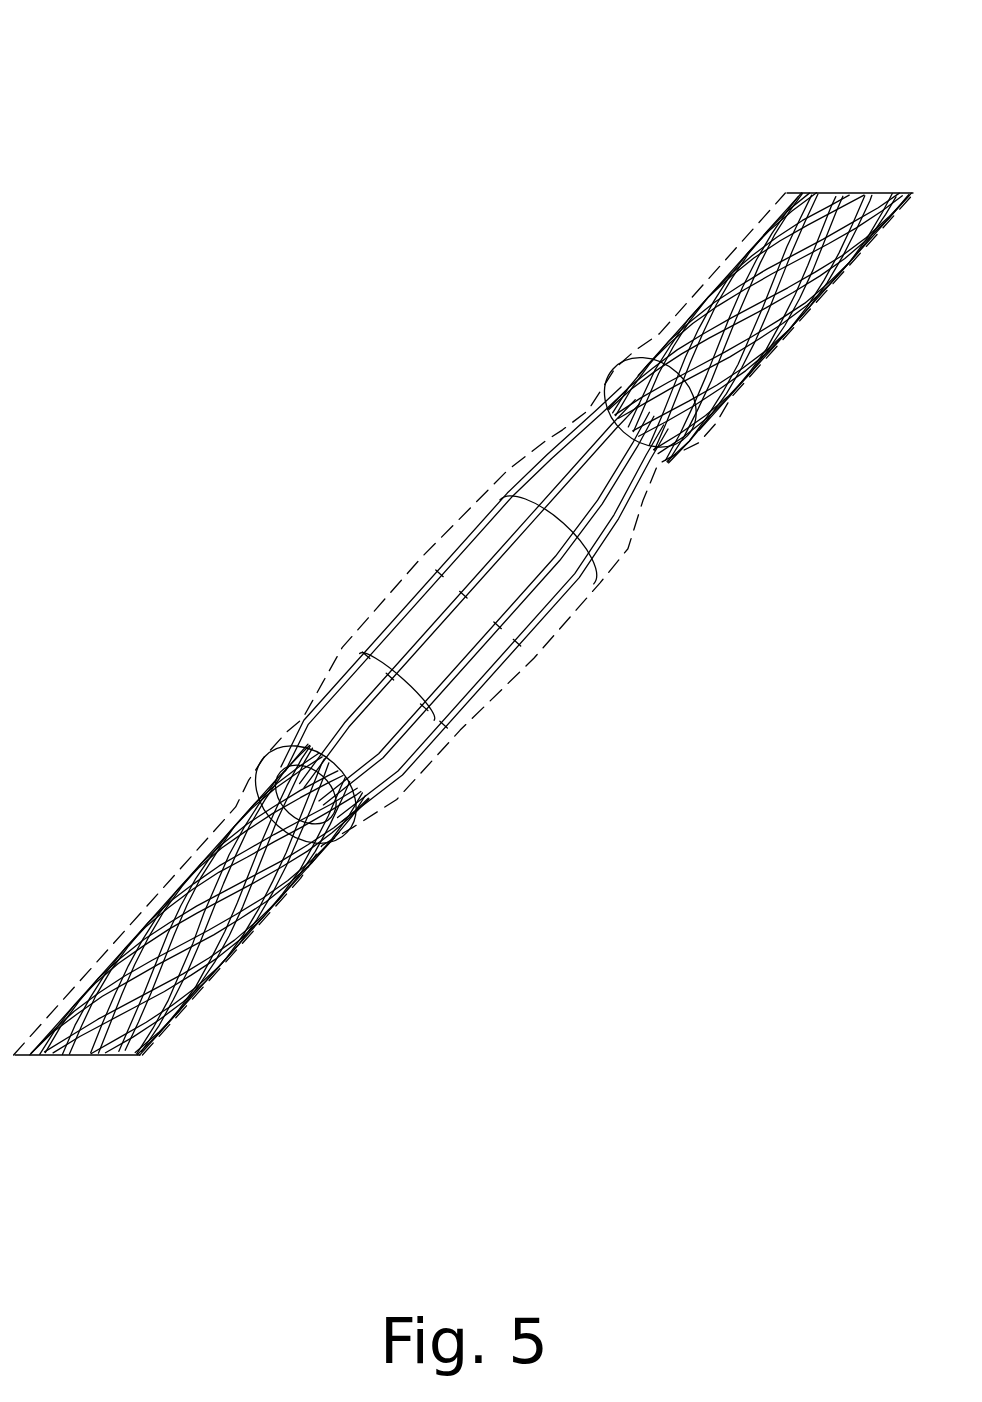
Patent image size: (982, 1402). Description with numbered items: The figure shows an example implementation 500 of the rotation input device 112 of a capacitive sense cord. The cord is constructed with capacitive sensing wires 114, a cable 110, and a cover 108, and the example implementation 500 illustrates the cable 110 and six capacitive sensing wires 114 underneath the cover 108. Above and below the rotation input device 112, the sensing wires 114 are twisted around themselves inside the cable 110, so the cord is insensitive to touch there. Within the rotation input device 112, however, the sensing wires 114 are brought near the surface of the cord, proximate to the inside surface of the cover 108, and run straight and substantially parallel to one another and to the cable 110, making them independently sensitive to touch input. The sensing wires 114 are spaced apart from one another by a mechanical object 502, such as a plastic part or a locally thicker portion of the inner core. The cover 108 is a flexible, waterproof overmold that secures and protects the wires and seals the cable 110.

The example implementation 500 is at (467, 570).
The rotation input device 112 is at (460, 343).
The cover 108 is at (436, 542).
The cable 110 is at (247, 804).
The capacitive sensing wires 114 is at (565, 603).
The mechanical object 502 is at (445, 653).